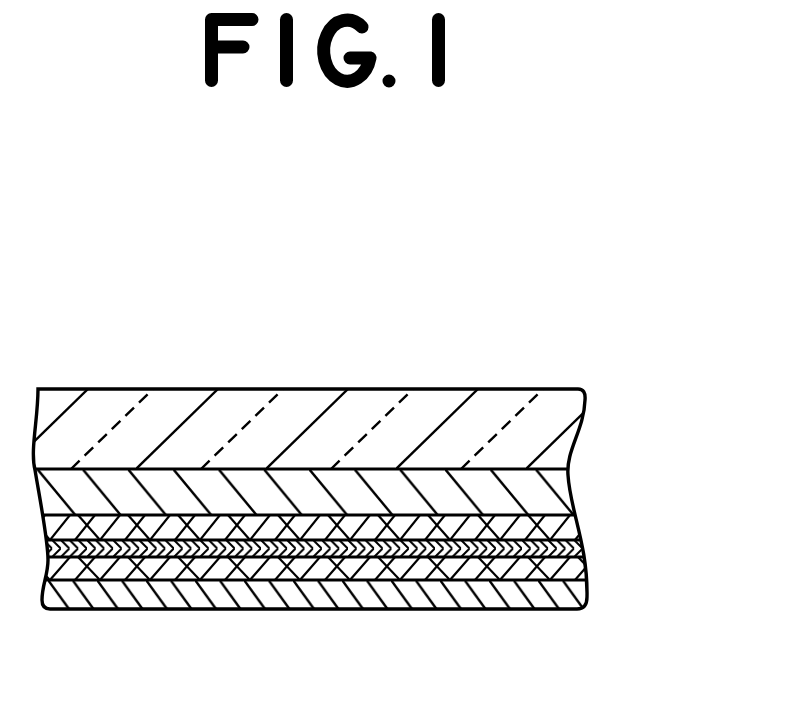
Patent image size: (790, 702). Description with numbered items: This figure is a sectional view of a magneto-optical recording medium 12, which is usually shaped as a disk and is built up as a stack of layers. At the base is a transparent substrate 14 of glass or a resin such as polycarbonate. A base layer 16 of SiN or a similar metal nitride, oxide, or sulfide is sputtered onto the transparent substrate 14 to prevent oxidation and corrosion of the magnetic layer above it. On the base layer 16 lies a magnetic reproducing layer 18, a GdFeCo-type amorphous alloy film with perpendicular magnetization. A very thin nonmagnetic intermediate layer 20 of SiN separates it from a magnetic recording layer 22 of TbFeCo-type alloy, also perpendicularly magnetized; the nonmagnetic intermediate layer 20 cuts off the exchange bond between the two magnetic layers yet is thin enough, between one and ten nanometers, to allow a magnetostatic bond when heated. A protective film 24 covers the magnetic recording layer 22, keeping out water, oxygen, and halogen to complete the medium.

The magneto-optical recording medium 12 is at (301, 382).
The transparent substrate 14 is at (517, 390).
The base layer 16 is at (570, 488).
The magnetic reproducing layer 18 is at (572, 525).
The nonmagnetic intermediate layer 20 is at (583, 547).
The magnetic recording layer 22 is at (587, 567).
The protective film 24 is at (482, 610).